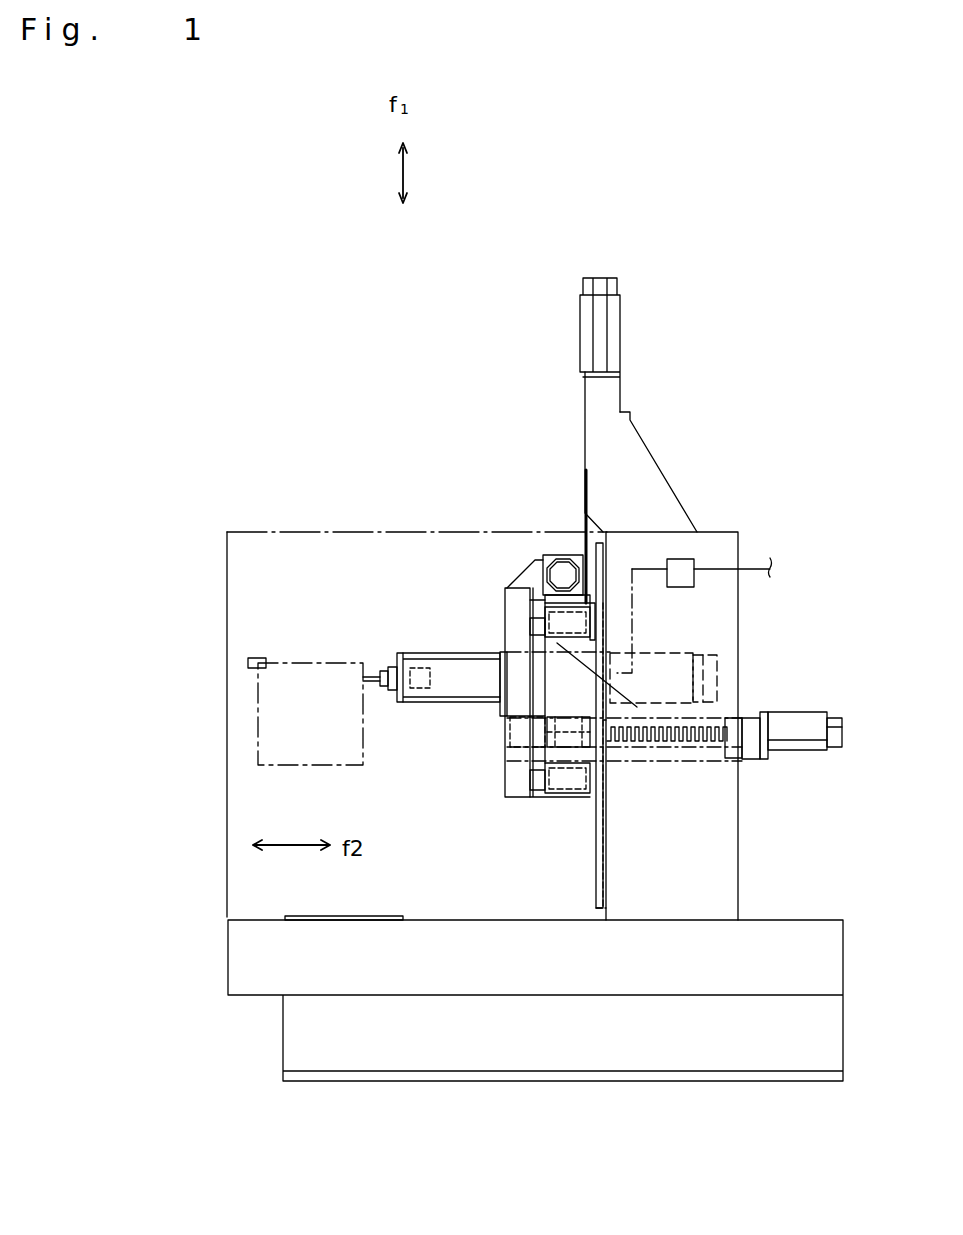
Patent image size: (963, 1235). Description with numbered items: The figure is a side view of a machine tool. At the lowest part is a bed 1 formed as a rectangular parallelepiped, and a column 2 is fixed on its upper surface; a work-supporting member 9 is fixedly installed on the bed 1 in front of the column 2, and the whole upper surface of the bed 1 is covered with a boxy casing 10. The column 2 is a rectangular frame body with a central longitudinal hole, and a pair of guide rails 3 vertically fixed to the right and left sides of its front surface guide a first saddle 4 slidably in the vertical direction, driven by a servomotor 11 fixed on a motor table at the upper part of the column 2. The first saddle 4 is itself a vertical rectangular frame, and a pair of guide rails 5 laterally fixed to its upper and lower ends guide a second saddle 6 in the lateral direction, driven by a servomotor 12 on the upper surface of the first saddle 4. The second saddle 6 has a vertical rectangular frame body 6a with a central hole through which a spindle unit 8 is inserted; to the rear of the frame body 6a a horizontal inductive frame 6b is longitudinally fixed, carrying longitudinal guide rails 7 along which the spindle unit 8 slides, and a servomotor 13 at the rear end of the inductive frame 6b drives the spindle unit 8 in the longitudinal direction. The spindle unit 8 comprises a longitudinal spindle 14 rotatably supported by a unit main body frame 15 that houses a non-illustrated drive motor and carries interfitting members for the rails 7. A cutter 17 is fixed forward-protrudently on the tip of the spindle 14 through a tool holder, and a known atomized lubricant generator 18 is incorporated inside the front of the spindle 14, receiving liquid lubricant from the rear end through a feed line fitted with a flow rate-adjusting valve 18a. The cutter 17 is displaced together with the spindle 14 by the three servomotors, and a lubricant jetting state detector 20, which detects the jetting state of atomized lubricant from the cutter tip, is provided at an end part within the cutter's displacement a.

The bed 1 is at (607, 1057).
The column 2 is at (730, 873).
The guide rails 3 is at (598, 875).
The first saddle 4 is at (572, 798).
The guide rails 5 is at (540, 620).
The second saddle 6 is at (508, 762).
The rectangular frame body 6a is at (521, 687).
The horizontal inductive frame 6b is at (681, 763).
The longitudinal guide rails 7 is at (713, 718).
The spindle unit 8 is at (481, 652).
The work-supporting member 9 is at (372, 917).
The boxy casing 10 is at (403, 529).
The servomotor 11 is at (618, 323).
The servomotor 12 is at (563, 573).
The servomotor 13 is at (812, 712).
The spindle 14 is at (394, 665).
The unit main body frame 15 is at (454, 672).
The cutter 17 is at (379, 684).
The atomized lubricant generator 18 is at (410, 683).
The flow rate-adjusting valve 18a is at (682, 587).
The lubricant jetting state detector 20 is at (256, 655).
The cutter's displacement a is at (290, 766).